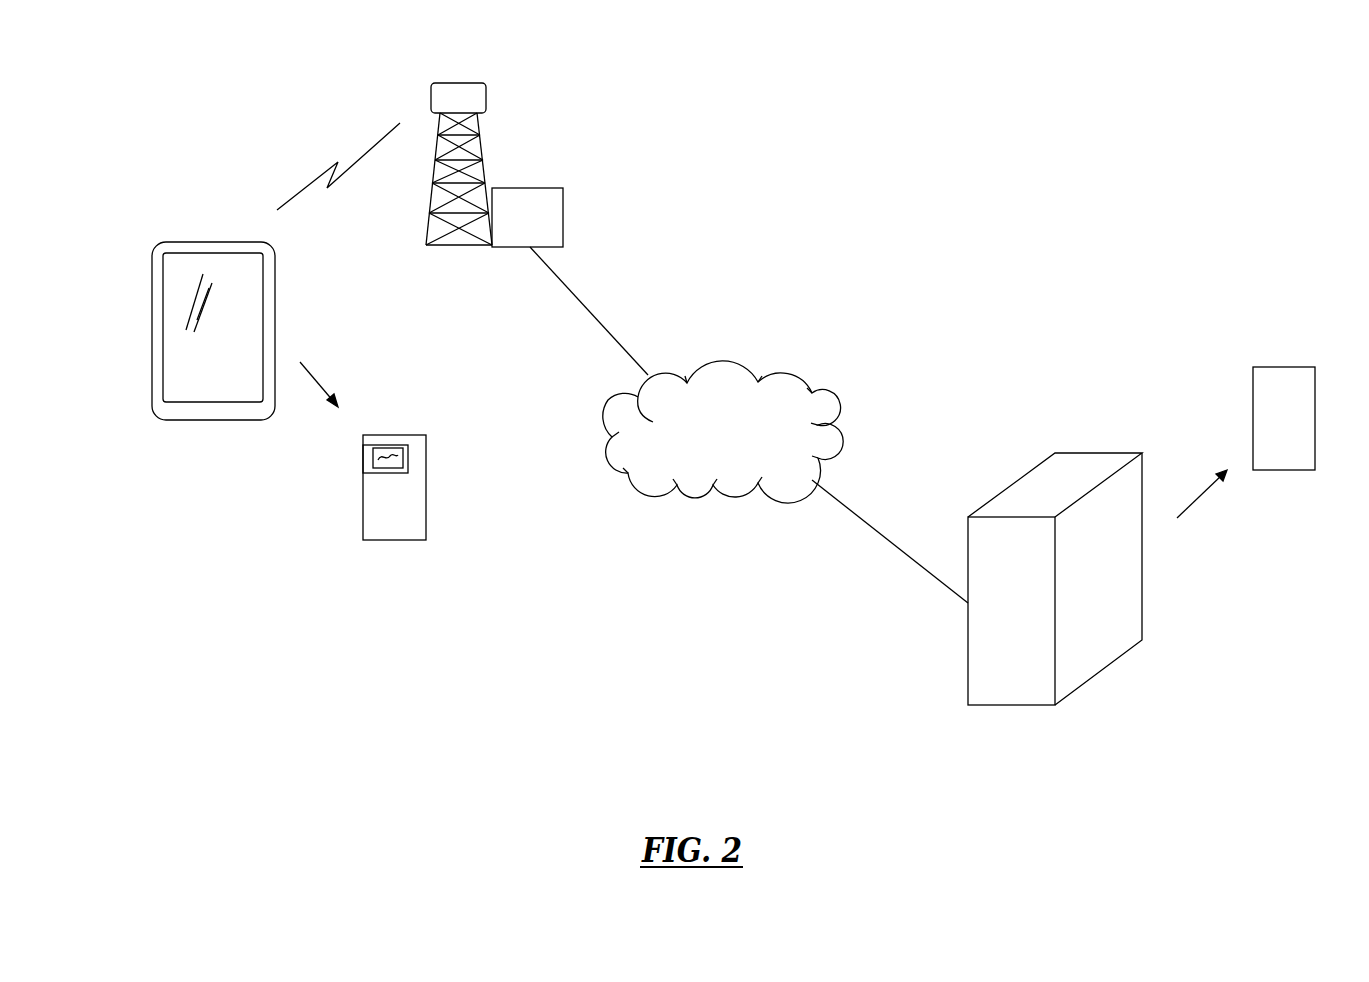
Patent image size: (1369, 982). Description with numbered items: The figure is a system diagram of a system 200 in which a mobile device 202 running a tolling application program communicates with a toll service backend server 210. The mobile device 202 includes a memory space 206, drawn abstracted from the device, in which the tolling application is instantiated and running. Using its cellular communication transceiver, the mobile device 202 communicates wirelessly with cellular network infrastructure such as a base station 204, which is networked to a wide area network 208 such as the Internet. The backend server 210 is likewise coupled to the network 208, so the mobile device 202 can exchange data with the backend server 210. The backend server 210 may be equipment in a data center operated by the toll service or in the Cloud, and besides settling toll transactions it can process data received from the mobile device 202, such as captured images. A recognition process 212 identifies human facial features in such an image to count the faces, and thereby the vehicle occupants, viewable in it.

The system 200 is at (983, 75).
The mobile device 202 is at (200, 414).
The base station 204 is at (537, 188).
The memory space 206 is at (397, 540).
The wide area network 208 is at (785, 368).
The backend server 210 is at (1112, 667).
The recognition process 212 is at (1270, 367).